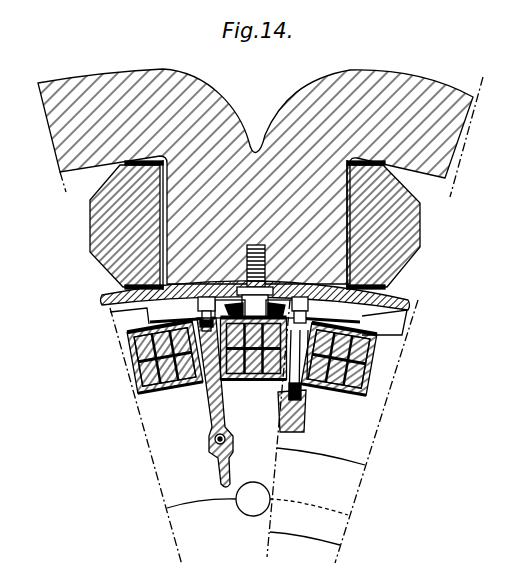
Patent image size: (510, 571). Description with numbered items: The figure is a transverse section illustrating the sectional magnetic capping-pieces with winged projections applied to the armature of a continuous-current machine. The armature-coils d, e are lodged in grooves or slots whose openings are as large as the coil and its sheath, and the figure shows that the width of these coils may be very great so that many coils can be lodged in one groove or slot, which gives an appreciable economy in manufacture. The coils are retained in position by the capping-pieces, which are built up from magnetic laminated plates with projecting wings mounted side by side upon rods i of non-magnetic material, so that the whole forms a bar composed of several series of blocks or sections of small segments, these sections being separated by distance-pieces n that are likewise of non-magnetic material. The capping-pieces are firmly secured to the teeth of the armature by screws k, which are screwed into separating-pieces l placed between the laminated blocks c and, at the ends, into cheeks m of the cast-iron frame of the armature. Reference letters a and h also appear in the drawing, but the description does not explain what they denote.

The field magnet pole piece a is at (255, 176).
The armature shaft bearing c is at (257, 499).
The armature coil d is at (128, 362).
The armature core e is at (168, 388).
The adjusting rod h is at (293, 381).
The insulating block i is at (179, 300).
The clamping bolt k is at (207, 300).
The lever l is at (212, 413).
The armature segment m is at (321, 446).
The brush plate n is at (228, 304).